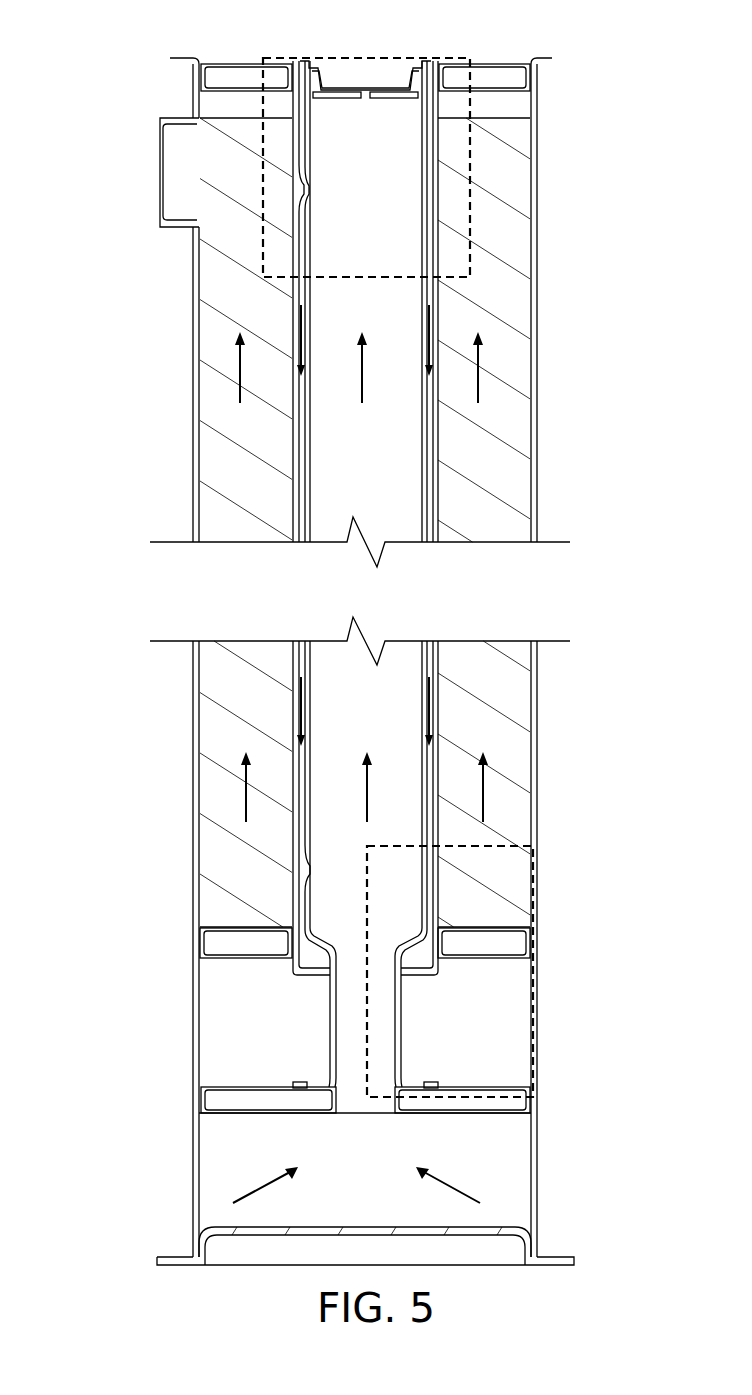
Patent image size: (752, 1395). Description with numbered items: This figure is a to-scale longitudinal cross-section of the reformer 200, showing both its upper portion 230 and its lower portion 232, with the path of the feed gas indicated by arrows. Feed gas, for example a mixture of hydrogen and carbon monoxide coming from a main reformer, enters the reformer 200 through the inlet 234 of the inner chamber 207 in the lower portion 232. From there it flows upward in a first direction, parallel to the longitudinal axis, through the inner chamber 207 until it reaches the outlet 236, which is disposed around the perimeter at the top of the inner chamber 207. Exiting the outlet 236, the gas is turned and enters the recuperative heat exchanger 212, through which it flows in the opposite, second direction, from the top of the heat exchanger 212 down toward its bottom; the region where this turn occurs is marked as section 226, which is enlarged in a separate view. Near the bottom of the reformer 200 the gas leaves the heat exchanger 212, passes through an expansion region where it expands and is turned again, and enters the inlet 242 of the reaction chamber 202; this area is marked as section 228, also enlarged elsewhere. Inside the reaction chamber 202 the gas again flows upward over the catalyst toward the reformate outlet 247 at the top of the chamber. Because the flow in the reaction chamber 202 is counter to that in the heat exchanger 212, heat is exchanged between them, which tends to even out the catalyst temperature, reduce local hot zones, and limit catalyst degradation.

The reformer 200 is at (142, 51).
The reaction chamber 202 is at (259, 493).
The inner chamber 207 is at (381, 480).
The recuperative heat exchanger 212 is at (428, 535).
The section 226 is at (413, 58).
The section 228 is at (533, 885).
The upper portion 230 is at (558, 151).
The lower portion 232 is at (568, 701).
The inlet 234 is at (352, 1113).
The outlet 236 is at (310, 97).
The inlet 242 is at (240, 917).
The reformate outlet 247 is at (242, 128).